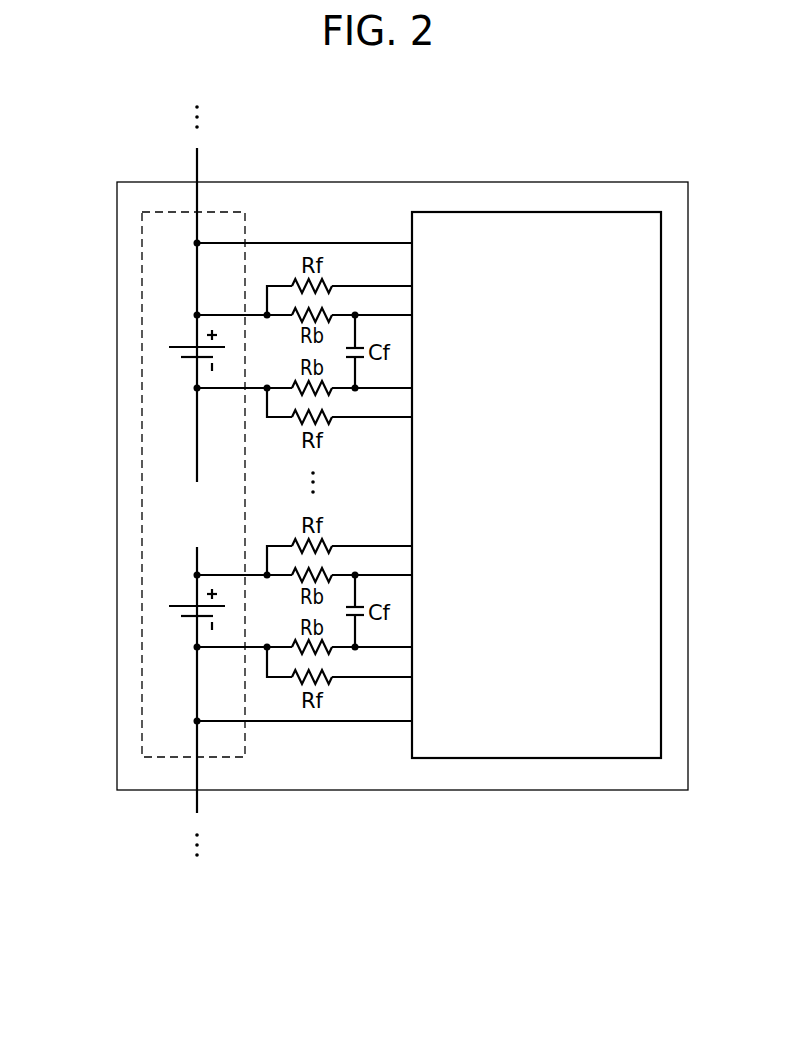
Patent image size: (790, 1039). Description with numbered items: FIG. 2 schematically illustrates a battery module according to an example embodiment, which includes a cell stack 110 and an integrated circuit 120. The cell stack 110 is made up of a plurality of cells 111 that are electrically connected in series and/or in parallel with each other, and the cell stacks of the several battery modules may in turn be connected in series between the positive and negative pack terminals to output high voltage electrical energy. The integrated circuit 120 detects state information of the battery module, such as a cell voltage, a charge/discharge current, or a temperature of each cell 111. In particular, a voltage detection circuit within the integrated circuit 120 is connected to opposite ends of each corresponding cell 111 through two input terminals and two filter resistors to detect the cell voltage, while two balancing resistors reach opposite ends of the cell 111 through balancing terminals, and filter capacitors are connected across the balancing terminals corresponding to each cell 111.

The cell stack 110 is at (141, 268).
The cell 111 is at (190, 346).
The integrated circuit 120 is at (535, 210).